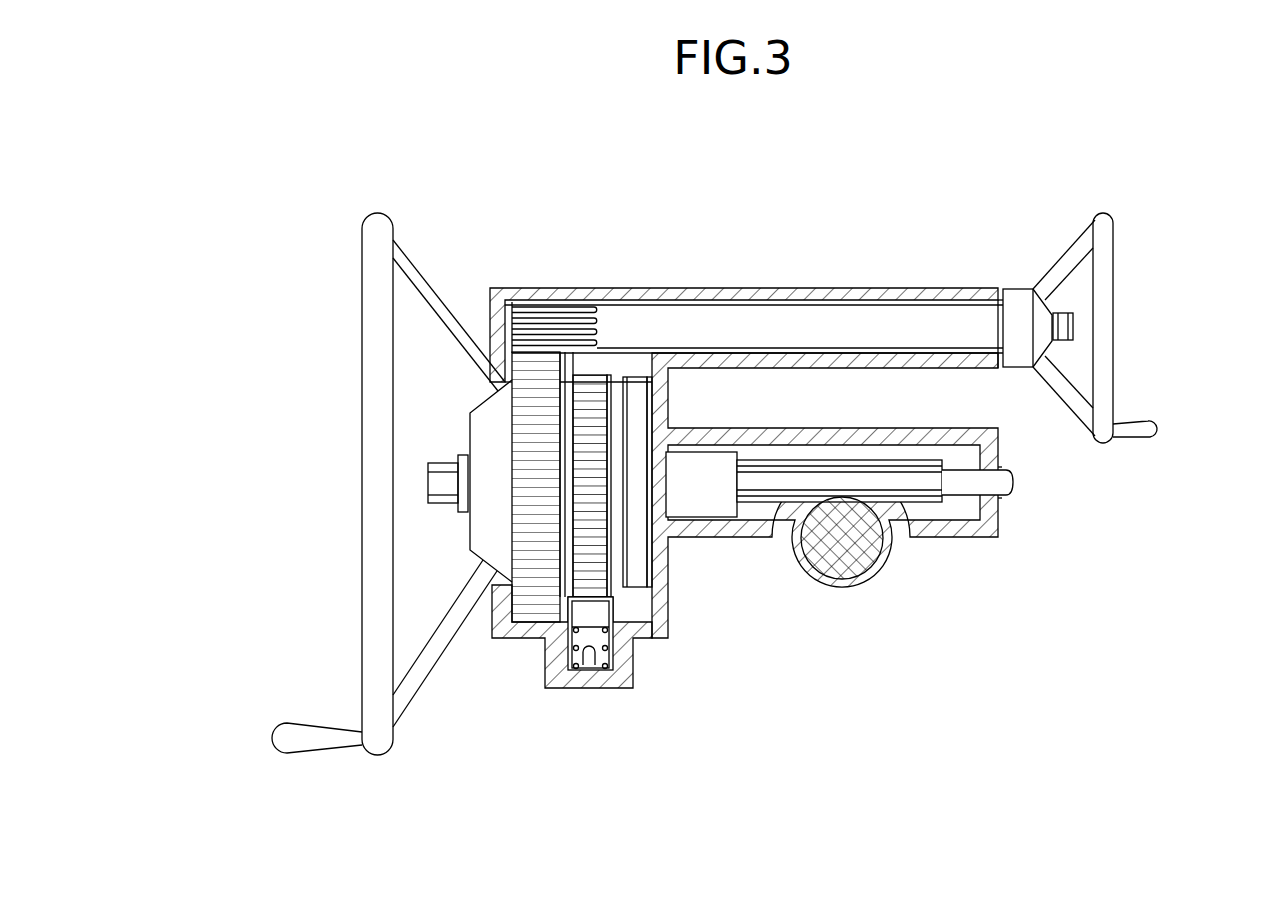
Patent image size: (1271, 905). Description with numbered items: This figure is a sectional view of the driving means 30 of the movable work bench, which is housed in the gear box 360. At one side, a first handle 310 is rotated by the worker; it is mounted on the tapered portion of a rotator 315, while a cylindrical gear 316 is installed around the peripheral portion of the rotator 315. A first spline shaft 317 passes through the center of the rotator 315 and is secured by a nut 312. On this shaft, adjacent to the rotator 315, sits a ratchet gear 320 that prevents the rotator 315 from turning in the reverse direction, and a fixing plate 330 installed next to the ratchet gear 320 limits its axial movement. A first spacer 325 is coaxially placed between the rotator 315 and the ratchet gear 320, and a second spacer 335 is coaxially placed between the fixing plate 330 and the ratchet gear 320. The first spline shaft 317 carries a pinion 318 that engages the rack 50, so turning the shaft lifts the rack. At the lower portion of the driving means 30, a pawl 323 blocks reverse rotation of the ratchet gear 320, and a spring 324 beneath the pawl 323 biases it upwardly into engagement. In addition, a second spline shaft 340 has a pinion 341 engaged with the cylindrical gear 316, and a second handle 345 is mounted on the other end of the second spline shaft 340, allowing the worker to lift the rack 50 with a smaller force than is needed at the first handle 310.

The driving means 30 is at (462, 533).
The rack 50 is at (853, 560).
The first handle 310 is at (312, 737).
The nut 312 is at (432, 487).
The rotator 315 is at (480, 420).
The cylindrical gear 316 is at (527, 618).
The first spline shaft 317 is at (705, 505).
The pinion 318 is at (913, 492).
The ratchet gear 320 is at (595, 375).
The pawl 323 is at (597, 613).
The spring 324 is at (597, 650).
The first spacer 325 is at (565, 392).
The fixing plate 330 is at (640, 385).
The second spacer 335 is at (612, 388).
The second spline shaft 340 is at (928, 322).
The pinion 341 is at (532, 327).
The second handle 345 is at (1103, 330).
The gear box 360 is at (848, 297).